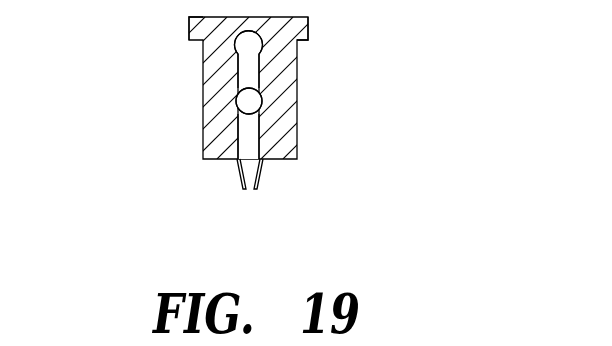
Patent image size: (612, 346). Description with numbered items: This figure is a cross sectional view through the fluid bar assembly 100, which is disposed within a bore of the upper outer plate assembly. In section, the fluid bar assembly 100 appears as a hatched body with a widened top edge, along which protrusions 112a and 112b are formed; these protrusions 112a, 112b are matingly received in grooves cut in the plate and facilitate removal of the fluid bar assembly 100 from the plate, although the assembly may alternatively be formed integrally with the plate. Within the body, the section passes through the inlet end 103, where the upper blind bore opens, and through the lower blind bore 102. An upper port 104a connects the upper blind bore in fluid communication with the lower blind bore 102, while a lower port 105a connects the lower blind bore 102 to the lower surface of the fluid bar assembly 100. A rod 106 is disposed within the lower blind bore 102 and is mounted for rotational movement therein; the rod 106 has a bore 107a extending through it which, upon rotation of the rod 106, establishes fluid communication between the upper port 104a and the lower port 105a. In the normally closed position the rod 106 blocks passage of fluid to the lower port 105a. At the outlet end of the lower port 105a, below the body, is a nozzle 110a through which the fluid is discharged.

The fluid bar assembly 100 is at (178, 78).
The lower blind bore 102 is at (238, 136).
The inlet end 103 is at (252, 45).
The upper port 104a is at (250, 68).
The lower port 105a is at (256, 144).
The rod 106 is at (236, 99).
The bore 107a is at (260, 105).
The nozzle 110a is at (264, 176).
The protrusion 112a is at (300, 29).
The protrusion 112b is at (203, 24).